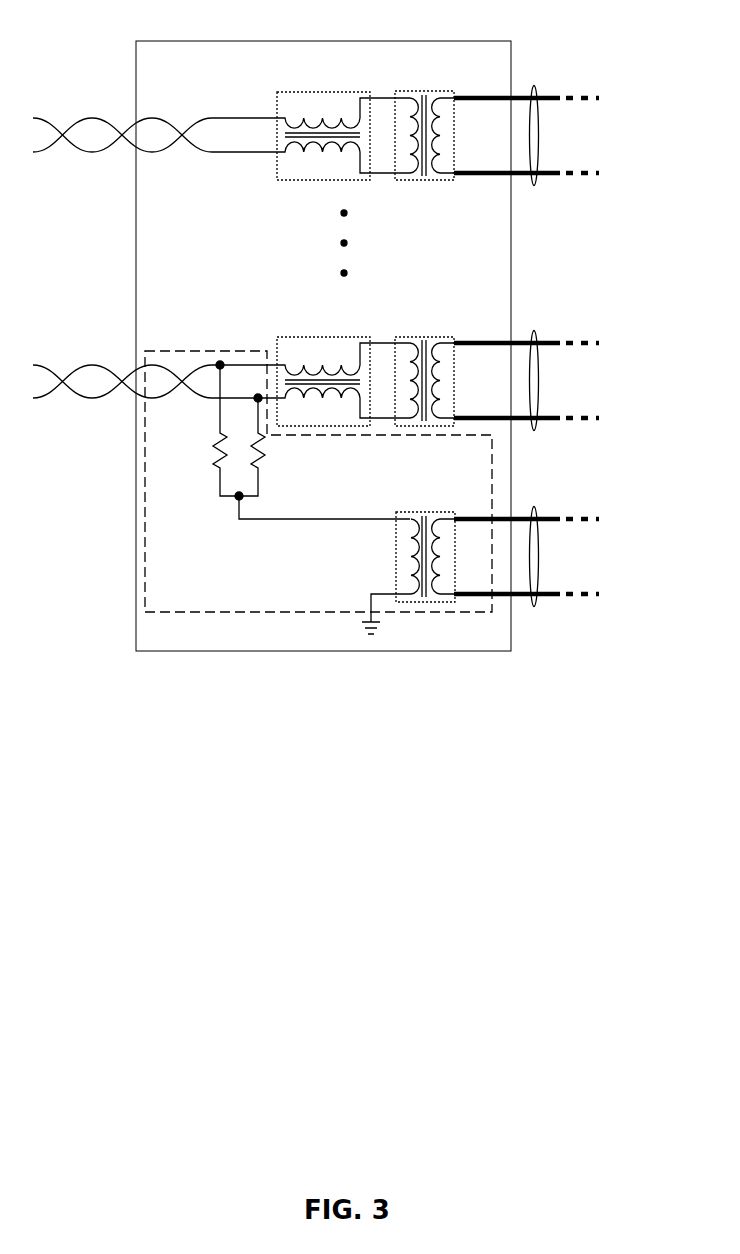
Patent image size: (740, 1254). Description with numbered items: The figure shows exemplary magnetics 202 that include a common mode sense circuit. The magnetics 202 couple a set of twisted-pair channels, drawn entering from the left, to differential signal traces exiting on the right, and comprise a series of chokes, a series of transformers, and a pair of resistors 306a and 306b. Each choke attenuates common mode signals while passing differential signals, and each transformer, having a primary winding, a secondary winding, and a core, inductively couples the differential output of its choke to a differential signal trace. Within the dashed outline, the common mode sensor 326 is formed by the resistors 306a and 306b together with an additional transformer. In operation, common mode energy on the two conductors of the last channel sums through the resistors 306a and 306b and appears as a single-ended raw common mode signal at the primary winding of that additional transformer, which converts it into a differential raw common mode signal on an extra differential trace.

The magnetics 202 is at (200, 41).
The common mode sensor 326 is at (318, 466).
The resistor 306a is at (215, 463).
The resistor 306b is at (265, 468).